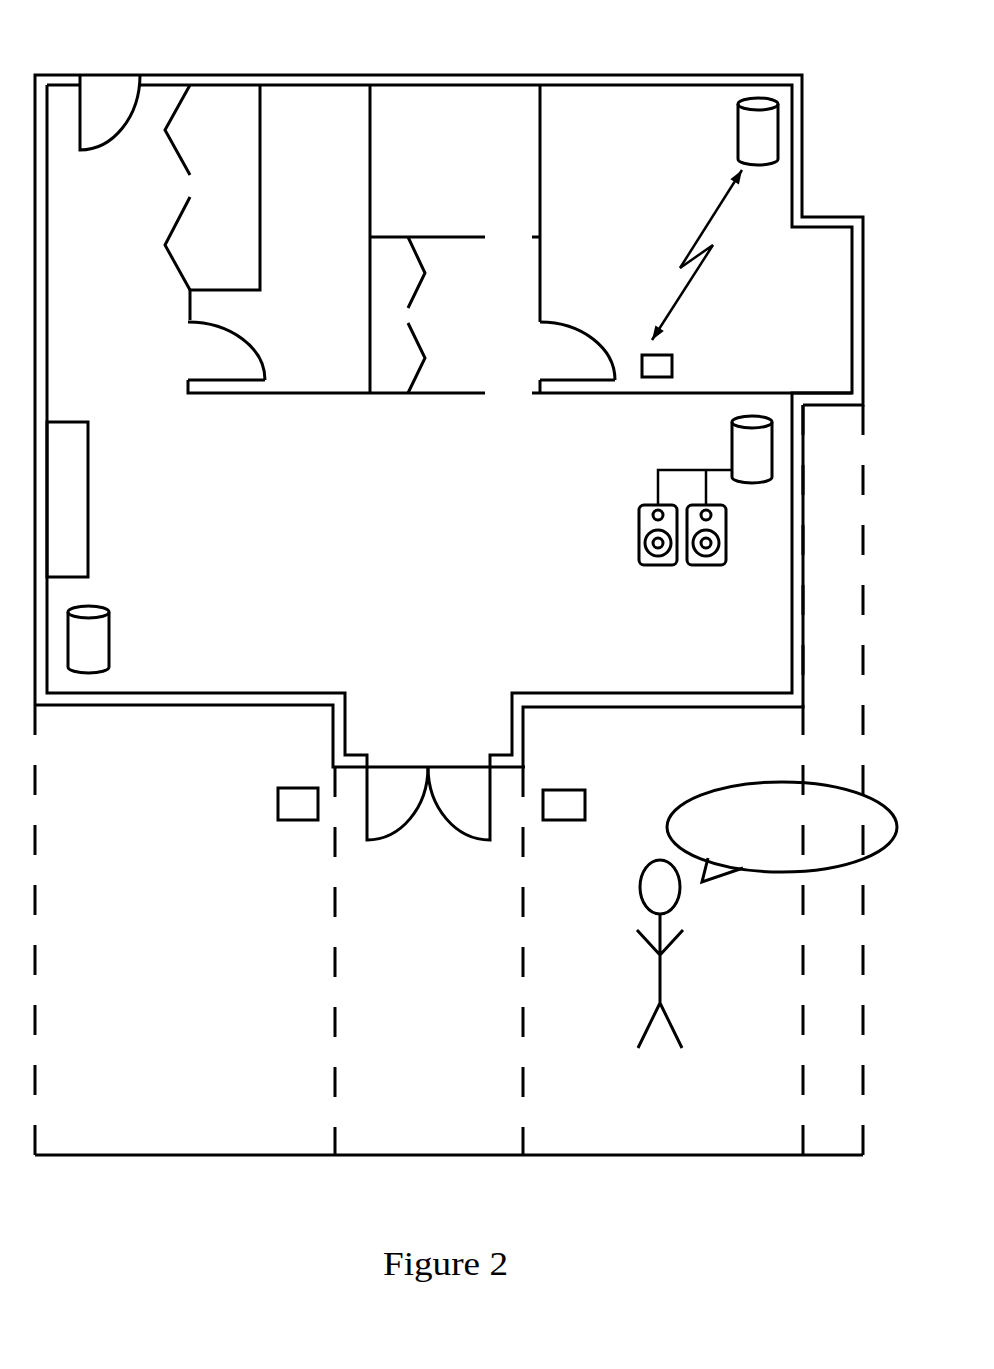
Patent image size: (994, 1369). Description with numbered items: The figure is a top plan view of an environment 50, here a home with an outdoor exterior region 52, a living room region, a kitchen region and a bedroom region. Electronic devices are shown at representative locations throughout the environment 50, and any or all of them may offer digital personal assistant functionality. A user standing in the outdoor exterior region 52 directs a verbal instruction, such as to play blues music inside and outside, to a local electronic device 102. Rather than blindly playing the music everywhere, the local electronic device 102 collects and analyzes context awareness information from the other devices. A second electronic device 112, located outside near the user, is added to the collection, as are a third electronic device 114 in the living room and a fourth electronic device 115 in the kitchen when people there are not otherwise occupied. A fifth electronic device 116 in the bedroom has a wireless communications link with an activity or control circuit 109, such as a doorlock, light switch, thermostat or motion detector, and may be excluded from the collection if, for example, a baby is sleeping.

The environment 50 is at (862, 147).
The outdoor exterior region 52 is at (712, 899).
The local electronic device 102 is at (585, 800).
The activity or control circuit 109 is at (668, 355).
The second electronic device 112 is at (278, 800).
The third electronic device 114 is at (109, 627).
The fourth electronic device 115 is at (732, 447).
The fifth electronic device 116 is at (738, 142).